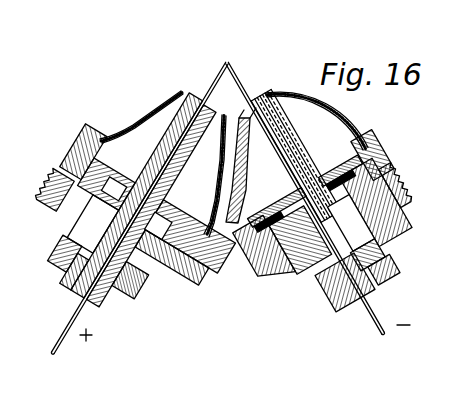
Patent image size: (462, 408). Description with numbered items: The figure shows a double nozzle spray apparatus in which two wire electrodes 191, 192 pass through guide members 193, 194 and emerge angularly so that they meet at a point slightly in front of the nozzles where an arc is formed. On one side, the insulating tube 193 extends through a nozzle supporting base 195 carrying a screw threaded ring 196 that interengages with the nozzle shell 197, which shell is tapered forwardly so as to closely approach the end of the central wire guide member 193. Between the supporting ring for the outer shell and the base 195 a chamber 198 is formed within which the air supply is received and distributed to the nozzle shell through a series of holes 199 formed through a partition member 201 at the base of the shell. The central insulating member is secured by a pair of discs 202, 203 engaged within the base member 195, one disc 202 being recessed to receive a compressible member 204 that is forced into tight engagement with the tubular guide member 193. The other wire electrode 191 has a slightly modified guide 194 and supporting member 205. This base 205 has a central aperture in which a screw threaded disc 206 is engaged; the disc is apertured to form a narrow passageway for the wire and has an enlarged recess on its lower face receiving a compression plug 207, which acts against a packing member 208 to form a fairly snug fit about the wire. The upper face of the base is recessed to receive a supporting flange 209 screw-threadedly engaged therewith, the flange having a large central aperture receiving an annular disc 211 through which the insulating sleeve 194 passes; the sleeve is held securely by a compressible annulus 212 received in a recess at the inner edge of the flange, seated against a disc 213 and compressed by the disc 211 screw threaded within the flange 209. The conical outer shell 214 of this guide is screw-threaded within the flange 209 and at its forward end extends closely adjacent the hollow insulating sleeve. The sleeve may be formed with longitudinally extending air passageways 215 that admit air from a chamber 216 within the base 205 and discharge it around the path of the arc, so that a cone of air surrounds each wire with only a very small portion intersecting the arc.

The wire electrode 191 is at (375, 307).
The wire electrode 192 is at (68, 323).
The insulating tube 193 is at (103, 299).
The insulating sleeve 194 is at (297, 145).
The nozzle supporting base 195 is at (60, 170).
The screw threaded ring 196 is at (86, 146).
The nozzle shell 197 is at (135, 108).
The chamber 198 is at (158, 281).
The holes 199 is at (113, 183).
The partition member 201 is at (117, 210).
The disc 202 is at (148, 263).
The disc 203 is at (80, 258).
The compressible member 204 is at (80, 268).
The supporting member 205 is at (401, 169).
The screw threaded disc 206 is at (382, 259).
The compression plug 207 is at (340, 291).
The packing member 208 is at (353, 244).
The supporting flange 209 is at (377, 154).
The annular disc 211 is at (277, 209).
The compressible annulus 212 is at (327, 179).
The disc 213 is at (313, 236).
The conical outer shell 214 is at (327, 116).
The air passageways 215 is at (271, 100).
The chamber 216 is at (295, 274).